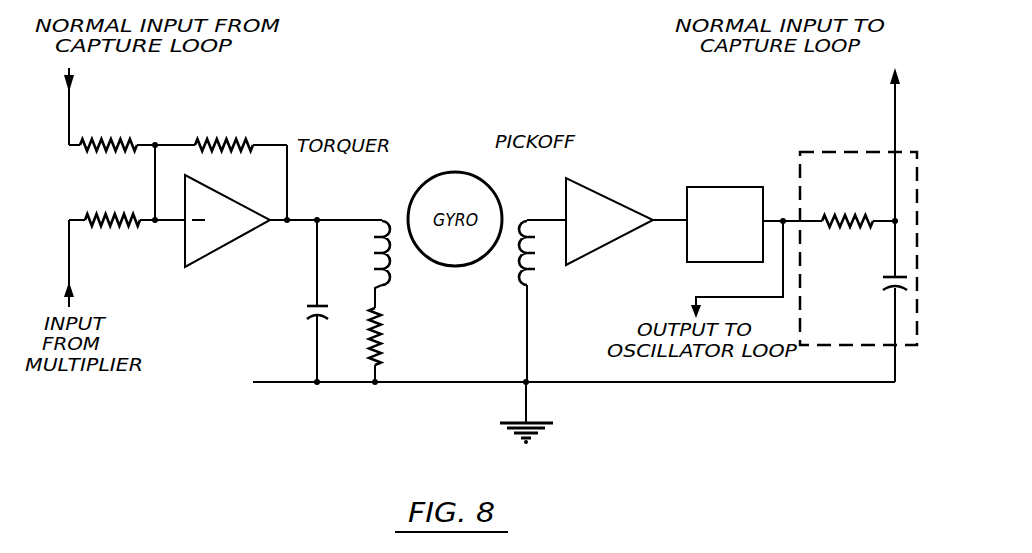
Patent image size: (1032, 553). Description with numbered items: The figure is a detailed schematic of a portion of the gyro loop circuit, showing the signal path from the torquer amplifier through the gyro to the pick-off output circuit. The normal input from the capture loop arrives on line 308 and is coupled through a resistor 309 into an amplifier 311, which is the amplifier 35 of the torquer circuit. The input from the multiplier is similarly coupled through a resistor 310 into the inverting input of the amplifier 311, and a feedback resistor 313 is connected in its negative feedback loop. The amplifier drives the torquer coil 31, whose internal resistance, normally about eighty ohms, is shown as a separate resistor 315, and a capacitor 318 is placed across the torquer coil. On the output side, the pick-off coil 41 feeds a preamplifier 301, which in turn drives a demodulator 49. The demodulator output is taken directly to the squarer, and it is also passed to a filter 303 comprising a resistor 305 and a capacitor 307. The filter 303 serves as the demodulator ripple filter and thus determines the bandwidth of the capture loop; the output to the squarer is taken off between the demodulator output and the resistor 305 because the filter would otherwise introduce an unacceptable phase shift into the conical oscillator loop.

The line 308 is at (70, 110).
The resistor 309 is at (117, 139).
The feedback resistor 313 is at (232, 139).
The resistor 310 is at (113, 226).
The amplifier 311 is at (212, 252).
The amplifier 35 is at (226, 261).
The capacitor 318 is at (322, 305).
The torquer coil 31 is at (392, 262).
The resistor 315 is at (385, 340).
The preamplifier 301 is at (596, 183).
The pick-off coil 41 is at (530, 270).
The demodulator 49 is at (725, 187).
The filter 303 is at (848, 152).
The resistor 305 is at (860, 228).
The capacitor 307 is at (887, 285).